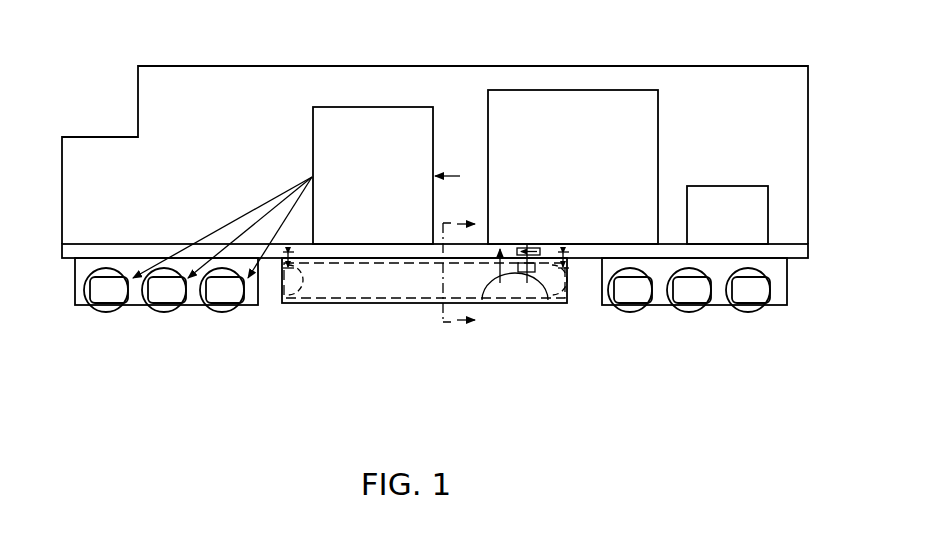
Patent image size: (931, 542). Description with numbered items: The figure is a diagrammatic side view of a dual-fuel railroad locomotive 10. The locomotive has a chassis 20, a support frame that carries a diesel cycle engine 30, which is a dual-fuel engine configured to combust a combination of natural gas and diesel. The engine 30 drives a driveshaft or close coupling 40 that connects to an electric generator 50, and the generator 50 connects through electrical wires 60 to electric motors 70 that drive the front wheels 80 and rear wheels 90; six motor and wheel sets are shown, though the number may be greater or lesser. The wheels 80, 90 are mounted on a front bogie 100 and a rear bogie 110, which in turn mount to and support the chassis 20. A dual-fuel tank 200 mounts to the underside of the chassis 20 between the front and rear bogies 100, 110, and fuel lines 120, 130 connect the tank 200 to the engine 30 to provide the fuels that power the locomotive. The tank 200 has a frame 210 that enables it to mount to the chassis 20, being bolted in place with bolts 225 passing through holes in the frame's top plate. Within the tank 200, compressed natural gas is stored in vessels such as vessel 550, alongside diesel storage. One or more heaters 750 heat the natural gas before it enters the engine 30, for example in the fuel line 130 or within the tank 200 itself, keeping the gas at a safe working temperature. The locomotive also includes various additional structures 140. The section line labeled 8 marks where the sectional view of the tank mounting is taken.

The dual-fuel railroad locomotive 10 is at (183, 52).
The chassis 20 is at (797, 252).
The diesel cycle engine 30 is at (555, 179).
The driveshaft or close coupling 40 is at (460, 176).
The electric generator 50 is at (361, 186).
The electrical wires 60 is at (280, 228).
The electric motors 70 is at (99, 299).
The front wheels 80 is at (222, 312).
The rear wheels 90 is at (630, 313).
The front bogie 100 is at (268, 285).
The rear bogie 110 is at (789, 280).
The fuel line 120 is at (482, 300).
The fuel line 130 is at (548, 300).
The additional structures 140 is at (710, 226).
The dual-fuel tank 200 is at (352, 291).
The frame 210 is at (533, 305).
The bolts 225 is at (300, 262).
The natural gas storage vessel 550 is at (403, 308).
The heater 750 is at (535, 263).
The section line 8- 8 is at (461, 286).